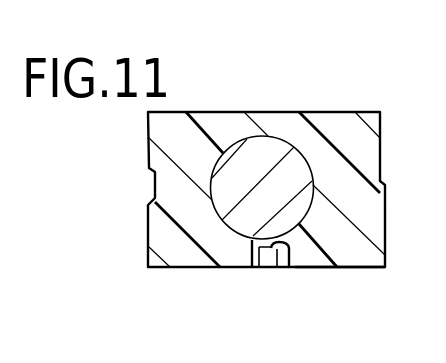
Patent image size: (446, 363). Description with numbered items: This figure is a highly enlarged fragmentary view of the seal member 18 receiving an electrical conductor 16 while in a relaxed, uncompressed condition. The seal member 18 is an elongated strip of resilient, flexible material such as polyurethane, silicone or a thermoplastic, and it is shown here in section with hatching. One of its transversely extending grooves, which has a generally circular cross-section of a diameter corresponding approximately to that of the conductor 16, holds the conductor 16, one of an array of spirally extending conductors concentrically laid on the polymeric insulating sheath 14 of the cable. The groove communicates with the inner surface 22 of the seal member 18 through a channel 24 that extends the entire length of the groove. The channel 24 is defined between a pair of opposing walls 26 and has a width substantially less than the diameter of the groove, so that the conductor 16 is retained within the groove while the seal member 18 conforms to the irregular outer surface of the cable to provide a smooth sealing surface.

The polymeric insulating sheath 14 is at (217, 306).
The spirally extending conductor 16 is at (253, 165).
The seal member 18 is at (292, 112).
The inner surface 22 is at (317, 267).
The channel 24 is at (289, 267).
The opposing walls 26 is at (268, 262).